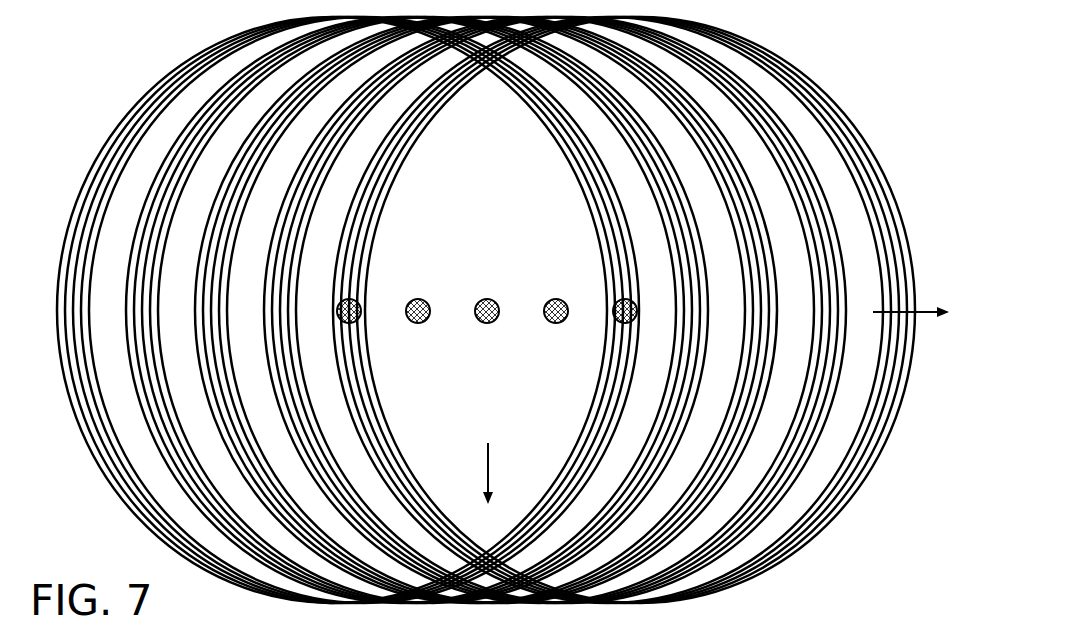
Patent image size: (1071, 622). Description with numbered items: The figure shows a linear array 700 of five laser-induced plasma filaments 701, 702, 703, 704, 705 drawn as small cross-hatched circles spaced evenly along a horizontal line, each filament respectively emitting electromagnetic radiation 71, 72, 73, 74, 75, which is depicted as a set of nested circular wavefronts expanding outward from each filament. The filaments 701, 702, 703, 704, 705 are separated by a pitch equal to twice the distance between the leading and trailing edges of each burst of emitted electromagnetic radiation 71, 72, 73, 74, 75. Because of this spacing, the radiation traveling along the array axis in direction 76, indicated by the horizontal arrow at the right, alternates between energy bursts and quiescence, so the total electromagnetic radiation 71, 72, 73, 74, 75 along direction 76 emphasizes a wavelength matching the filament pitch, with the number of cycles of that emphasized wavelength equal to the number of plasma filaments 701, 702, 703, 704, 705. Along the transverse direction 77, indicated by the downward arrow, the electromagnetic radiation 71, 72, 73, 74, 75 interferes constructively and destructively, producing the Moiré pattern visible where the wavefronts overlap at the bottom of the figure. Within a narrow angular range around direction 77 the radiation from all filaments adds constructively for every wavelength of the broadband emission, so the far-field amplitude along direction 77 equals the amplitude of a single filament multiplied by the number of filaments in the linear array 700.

The electromagnetic radiation 71 is at (55, 292).
The electromagnetic radiation 72 is at (124, 292).
The electromagnetic radiation 73 is at (193, 292).
The electromagnetic radiation 74 is at (262, 292).
The electromagnetic radiation 75 is at (331, 292).
The direction 76 is at (928, 310).
The direction 77 is at (486, 478).
The linear array 700 is at (453, 246).
The laser-induced plasma filament 701 is at (358, 301).
The laser-induced plasma filament 702 is at (418, 299).
The laser-induced plasma filament 703 is at (487, 299).
The laser-induced plasma filament 704 is at (556, 299).
The laser-induced plasma filament 705 is at (615, 302).